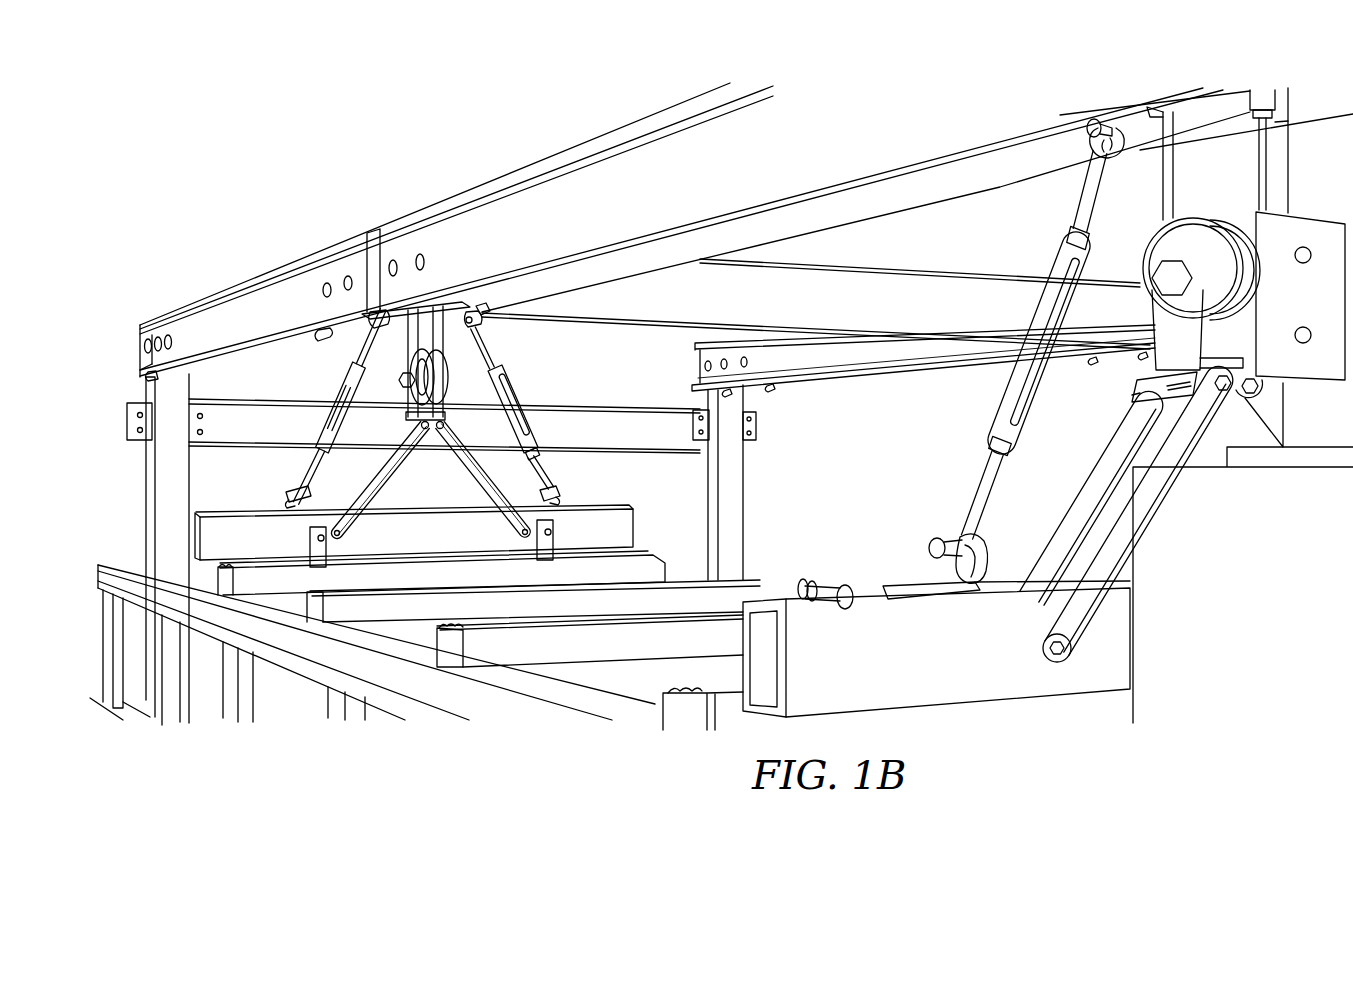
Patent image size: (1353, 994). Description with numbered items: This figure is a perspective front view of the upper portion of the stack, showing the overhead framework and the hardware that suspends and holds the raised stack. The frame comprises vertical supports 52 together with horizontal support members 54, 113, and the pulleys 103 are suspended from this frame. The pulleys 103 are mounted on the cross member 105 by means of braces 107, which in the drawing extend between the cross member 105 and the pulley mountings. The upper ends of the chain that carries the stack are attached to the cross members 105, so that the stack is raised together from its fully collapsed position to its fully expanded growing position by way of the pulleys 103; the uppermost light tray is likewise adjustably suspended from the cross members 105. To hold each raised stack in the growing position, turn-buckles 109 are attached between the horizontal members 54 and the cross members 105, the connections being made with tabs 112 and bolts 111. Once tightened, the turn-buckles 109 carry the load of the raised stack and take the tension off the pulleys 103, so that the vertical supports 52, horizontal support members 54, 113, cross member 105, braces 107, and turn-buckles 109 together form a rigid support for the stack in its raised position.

The vertical supports 52 is at (173, 482).
The horizontal support members 54 is at (547, 232).
The pulleys 103 is at (1208, 239).
The cross member 105 is at (267, 545).
The braces 107 is at (477, 477).
The turn-buckles 109 is at (317, 431).
The bolts 111 is at (1100, 127).
The tabs 112 is at (1127, 120).
The horizontal support member 113 is at (773, 306).